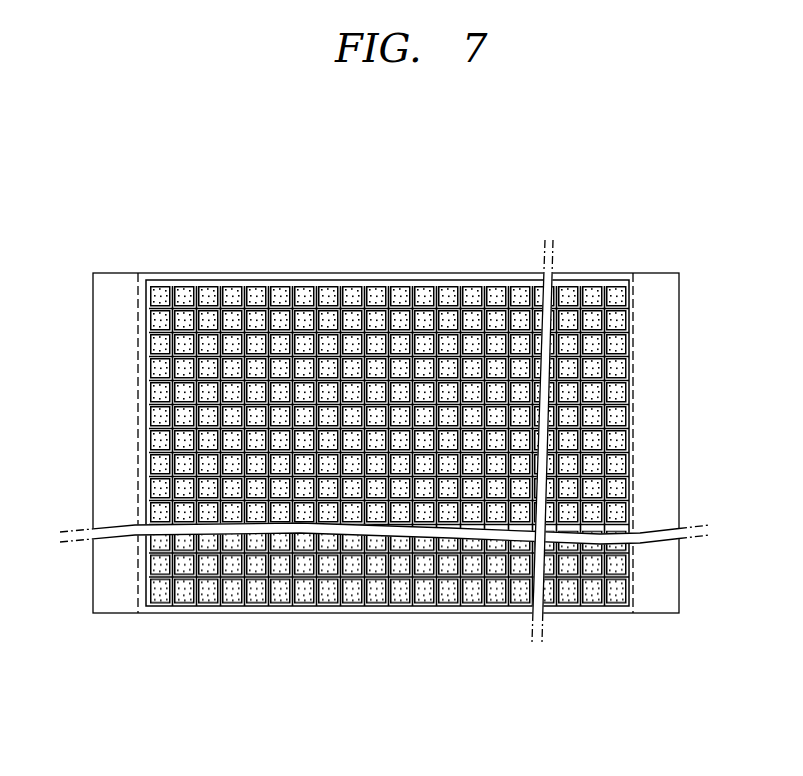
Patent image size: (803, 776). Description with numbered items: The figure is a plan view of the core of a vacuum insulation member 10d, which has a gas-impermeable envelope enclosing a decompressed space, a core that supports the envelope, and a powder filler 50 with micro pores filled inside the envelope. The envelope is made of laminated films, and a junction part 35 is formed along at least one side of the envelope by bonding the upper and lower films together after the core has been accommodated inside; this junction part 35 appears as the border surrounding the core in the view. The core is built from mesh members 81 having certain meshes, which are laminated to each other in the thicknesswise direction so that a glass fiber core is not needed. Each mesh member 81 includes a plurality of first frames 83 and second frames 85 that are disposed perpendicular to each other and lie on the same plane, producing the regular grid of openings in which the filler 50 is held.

The display device 10d is at (110, 237).
The junction part 35 is at (106, 393).
The filler 50 is at (163, 590).
The mesh member 81 is at (440, 476).
The first frame 83 is at (629, 379).
The second frame 85 is at (604, 289).